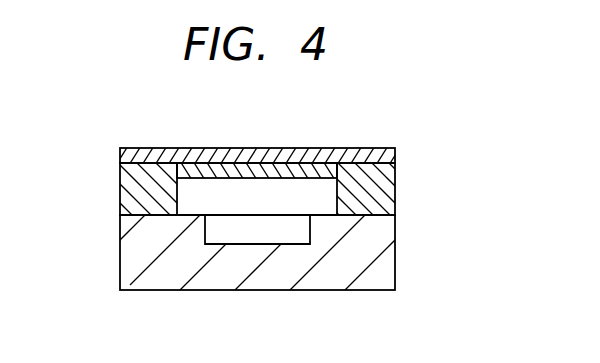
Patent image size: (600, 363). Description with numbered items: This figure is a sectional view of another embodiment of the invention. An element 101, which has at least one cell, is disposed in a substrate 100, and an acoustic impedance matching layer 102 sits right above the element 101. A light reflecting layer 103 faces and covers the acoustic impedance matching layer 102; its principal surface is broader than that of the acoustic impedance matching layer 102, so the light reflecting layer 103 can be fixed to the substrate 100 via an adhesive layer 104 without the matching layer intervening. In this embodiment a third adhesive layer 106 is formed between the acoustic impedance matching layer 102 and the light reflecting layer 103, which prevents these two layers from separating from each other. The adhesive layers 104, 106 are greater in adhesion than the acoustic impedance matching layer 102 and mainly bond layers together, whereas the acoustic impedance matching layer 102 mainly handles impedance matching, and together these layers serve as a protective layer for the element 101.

The substrate 100 is at (378, 248).
The element 101 is at (257, 230).
The acoustic impedance matching layer 102 is at (250, 184).
The light reflecting layer 103 is at (393, 153).
The adhesive layer 104 is at (137, 185).
The third adhesive layer 106 is at (308, 180).